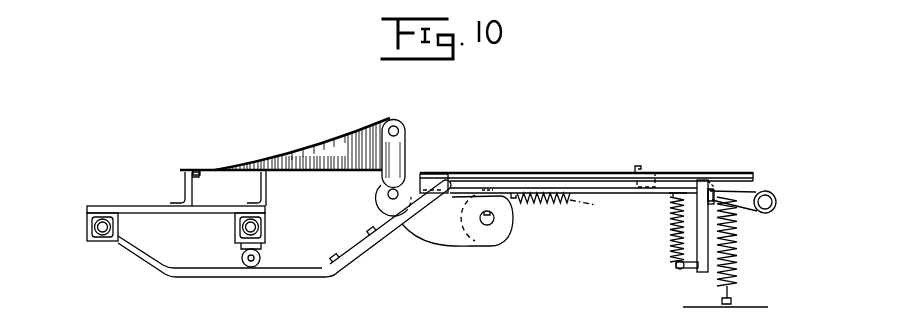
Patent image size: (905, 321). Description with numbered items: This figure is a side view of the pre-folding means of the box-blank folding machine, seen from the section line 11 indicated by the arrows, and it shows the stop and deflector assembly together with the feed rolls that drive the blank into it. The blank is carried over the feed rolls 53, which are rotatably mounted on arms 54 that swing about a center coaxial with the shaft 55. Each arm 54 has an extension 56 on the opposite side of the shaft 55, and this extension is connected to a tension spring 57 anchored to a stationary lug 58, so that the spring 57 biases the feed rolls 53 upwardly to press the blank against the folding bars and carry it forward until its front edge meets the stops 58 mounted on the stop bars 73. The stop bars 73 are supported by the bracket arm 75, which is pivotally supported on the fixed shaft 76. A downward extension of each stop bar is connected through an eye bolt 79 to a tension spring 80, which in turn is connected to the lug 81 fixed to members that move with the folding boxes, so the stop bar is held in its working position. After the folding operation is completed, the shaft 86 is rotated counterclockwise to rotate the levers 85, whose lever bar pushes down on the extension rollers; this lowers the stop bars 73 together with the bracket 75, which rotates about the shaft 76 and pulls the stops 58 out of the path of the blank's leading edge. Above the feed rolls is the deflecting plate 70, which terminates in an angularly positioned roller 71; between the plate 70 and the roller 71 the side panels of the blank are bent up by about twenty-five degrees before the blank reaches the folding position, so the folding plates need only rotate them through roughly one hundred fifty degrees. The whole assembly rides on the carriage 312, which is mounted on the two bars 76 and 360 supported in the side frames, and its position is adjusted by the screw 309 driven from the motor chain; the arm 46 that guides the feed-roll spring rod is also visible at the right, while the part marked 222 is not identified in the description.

The section line 11- 11 is at (93, 92).
The arm 46 is at (753, 172).
The feed rolls 53 is at (420, 178).
The arms 54 is at (436, 242).
The shaft 55 is at (486, 226).
The extension 56 is at (513, 192).
The tension spring 57 is at (543, 202).
The stops 58 is at (637, 166).
The deflecting plate 70 is at (252, 166).
The roller 71 is at (407, 128).
The stop bars 73 is at (611, 182).
The bracket arm 75 is at (401, 233).
The fixed shaft 76 is at (101, 236).
The eye bolt 79 is at (678, 268).
The tension spring 80 is at (671, 238).
The lug 81 is at (672, 200).
The levers 85 is at (742, 197).
The shaft 86 is at (772, 208).
The bar 222 is at (632, 195).
The screw 309 is at (262, 252).
The carriage 312 is at (267, 226).
The bar 360 is at (245, 234).